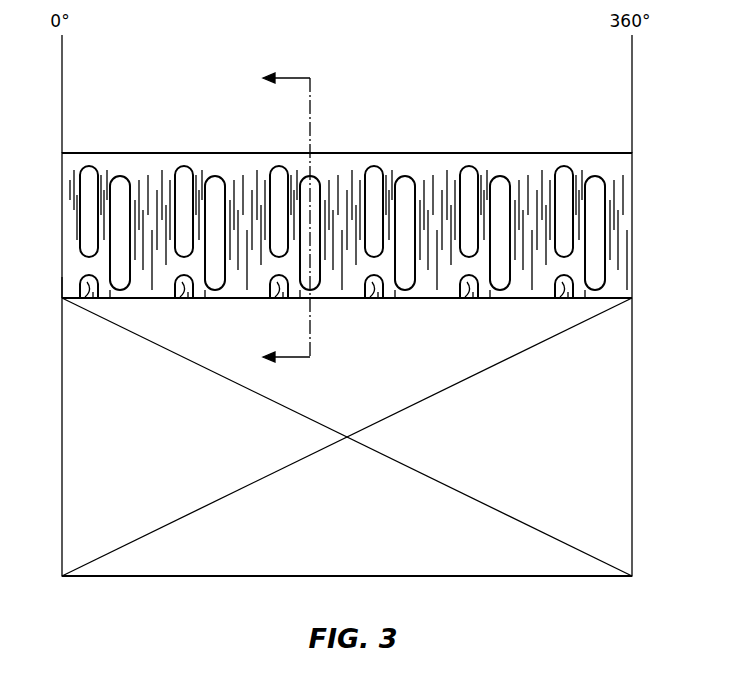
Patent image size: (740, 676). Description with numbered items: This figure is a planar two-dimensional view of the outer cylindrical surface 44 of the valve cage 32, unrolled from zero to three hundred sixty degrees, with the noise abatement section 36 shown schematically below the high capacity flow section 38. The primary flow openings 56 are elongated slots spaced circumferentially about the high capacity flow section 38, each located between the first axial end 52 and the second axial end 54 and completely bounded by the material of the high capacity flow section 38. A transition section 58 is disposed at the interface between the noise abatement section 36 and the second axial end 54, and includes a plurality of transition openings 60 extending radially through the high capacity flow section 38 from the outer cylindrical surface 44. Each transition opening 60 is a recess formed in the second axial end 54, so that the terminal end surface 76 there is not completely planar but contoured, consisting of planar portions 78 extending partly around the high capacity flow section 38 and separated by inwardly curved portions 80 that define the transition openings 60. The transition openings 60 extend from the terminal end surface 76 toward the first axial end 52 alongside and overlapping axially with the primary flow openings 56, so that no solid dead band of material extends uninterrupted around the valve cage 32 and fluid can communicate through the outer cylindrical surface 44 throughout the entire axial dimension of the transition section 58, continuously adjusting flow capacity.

The valve cage 32 is at (443, 101).
The noise abatement section 36 is at (640, 298).
The high capacity flow section 38 is at (640, 155).
The outer cylindrical surface 44 is at (250, 232).
The first axial end 52 is at (62, 153).
The second axial end 54 is at (62, 298).
The primary flow openings 56 is at (98, 167).
The transition section 58 is at (58, 277).
The transition openings 60 is at (94, 299).
The terminal end surface 76 is at (218, 299).
The planar portions 78 is at (122, 299).
The inwardly curved portions 80 is at (87, 282).